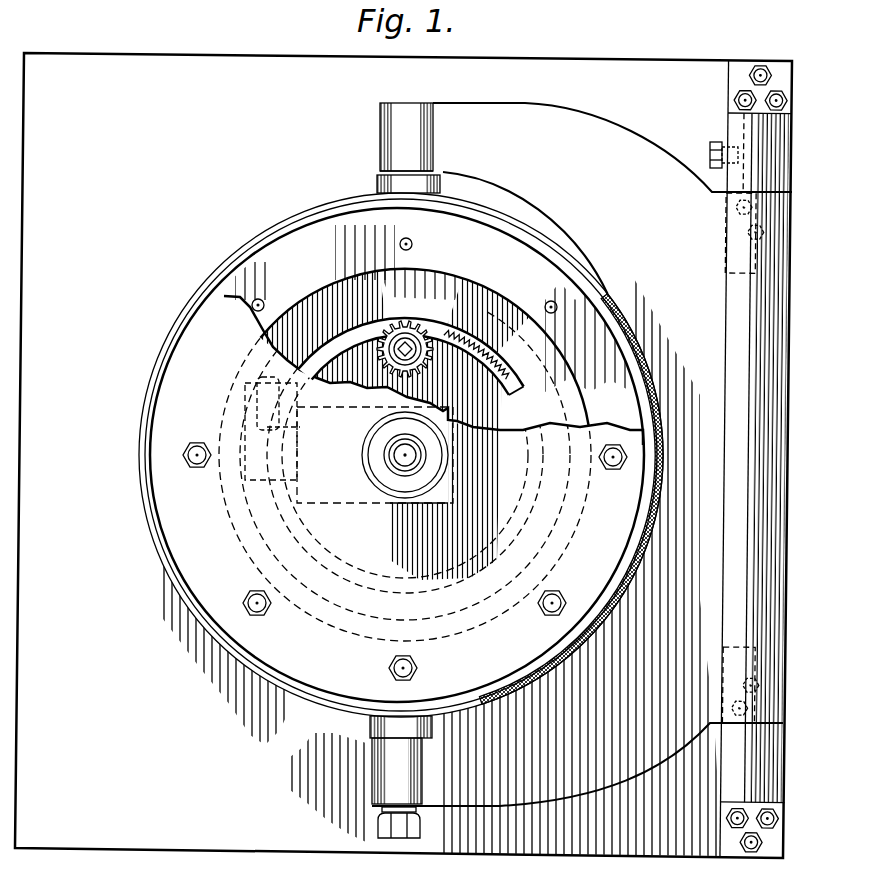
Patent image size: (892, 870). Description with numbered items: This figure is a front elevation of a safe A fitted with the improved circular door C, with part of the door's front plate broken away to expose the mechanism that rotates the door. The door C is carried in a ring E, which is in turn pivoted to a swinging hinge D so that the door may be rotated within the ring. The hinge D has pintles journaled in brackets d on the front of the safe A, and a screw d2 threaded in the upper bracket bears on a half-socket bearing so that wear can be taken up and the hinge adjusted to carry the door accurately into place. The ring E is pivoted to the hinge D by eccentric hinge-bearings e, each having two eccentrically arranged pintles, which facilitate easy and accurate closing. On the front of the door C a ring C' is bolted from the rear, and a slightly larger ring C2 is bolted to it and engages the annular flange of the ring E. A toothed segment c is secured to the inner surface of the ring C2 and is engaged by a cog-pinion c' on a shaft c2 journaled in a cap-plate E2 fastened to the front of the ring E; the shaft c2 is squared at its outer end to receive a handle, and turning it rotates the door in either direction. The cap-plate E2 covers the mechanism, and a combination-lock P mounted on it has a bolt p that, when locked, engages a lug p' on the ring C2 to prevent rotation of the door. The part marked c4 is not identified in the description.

The safe A is at (403, 455).
The hinge D is at (426, 795).
The bracket d is at (735, 128).
The screw d2 is at (709, 156).
The ring E is at (150, 543).
The cap-plate E2 is at (405, 455).
The combination-lock P is at (393, 456).
The bolt p is at (243, 450).
The lug or projection p' is at (251, 403).
The circular door C is at (411, 360).
The ring C' is at (561, 403).
The ring C2 is at (425, 349).
The toothed segment c is at (413, 334).
The cog-pinion c' is at (418, 584).
The shaft c2 is at (403, 357).
The collar c4 is at (378, 190).
The hinge-bearing e is at (395, 176).